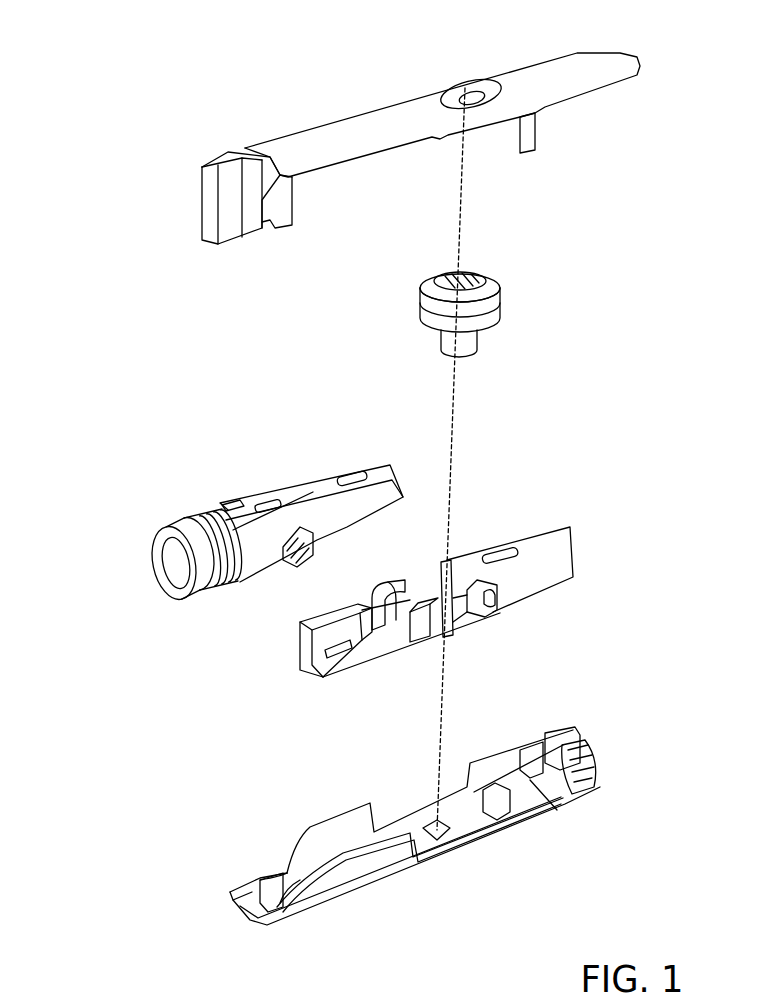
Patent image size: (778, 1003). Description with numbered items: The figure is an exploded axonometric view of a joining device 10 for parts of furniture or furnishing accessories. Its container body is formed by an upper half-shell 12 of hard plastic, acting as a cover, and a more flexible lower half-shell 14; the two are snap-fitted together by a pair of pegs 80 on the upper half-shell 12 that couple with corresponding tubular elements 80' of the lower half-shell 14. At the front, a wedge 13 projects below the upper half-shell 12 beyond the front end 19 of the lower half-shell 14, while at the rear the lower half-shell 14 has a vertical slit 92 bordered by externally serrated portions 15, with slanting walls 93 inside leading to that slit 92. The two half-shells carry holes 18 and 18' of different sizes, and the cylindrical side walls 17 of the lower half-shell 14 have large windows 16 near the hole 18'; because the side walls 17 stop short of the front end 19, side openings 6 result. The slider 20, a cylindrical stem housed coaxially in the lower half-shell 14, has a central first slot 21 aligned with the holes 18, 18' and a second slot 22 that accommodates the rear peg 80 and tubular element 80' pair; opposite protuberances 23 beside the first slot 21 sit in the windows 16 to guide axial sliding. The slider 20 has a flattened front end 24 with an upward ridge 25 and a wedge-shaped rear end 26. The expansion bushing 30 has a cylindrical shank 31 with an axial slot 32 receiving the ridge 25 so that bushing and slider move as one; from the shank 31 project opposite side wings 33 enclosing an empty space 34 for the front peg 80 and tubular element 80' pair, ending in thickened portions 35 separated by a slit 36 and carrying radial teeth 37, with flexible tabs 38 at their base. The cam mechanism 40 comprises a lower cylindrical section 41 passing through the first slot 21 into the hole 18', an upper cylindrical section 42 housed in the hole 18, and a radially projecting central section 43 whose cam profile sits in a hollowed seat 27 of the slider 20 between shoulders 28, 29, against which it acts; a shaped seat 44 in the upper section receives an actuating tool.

The joining device 10 is at (117, 350).
The upper half-shell 12 is at (368, 108).
The wedge 13 is at (205, 196).
The lower half-shell 14 is at (500, 840).
The externally serrated portions 15 is at (600, 765).
The windows 16 is at (392, 806).
The side walls 17 is at (468, 755).
The hole 18 is at (471, 72).
The hole 18' is at (423, 782).
The front end 19 is at (248, 912).
The slider 20 is at (553, 594).
The first slot 21 is at (428, 636).
The second slot 22 is at (492, 546).
The protuberances 23 is at (474, 618).
The flattened front end 24 is at (302, 676).
The ridge 25 is at (334, 656).
The rear end 26 is at (575, 530).
The hollowed seat 27 is at (408, 592).
The shoulder 28 is at (498, 610).
The shoulder 29 is at (441, 568).
The expansion bushing 30 is at (240, 580).
The cylindrical shank 31 is at (390, 463).
The axial slot 32 is at (342, 478).
The side wings 33 is at (208, 512).
The empty space 34 is at (262, 498).
The thickened portions 35 is at (160, 530).
The slit 36 is at (155, 560).
The teeth 37 is at (188, 602).
The flexible tabs 38 is at (232, 497).
The cam mechanism 40 is at (493, 302).
The lower cylindrical section 41 is at (482, 338).
The upper cylindrical section 42 is at (415, 292).
The central section 43 is at (412, 316).
The shaped seat 44 is at (454, 270).
The side openings 6 is at (290, 868).
The pegs 80 is at (421, 171).
The tubular elements 80' is at (363, 794).
The vertical slit 92 is at (563, 748).
The slanting walls 93 is at (552, 808).